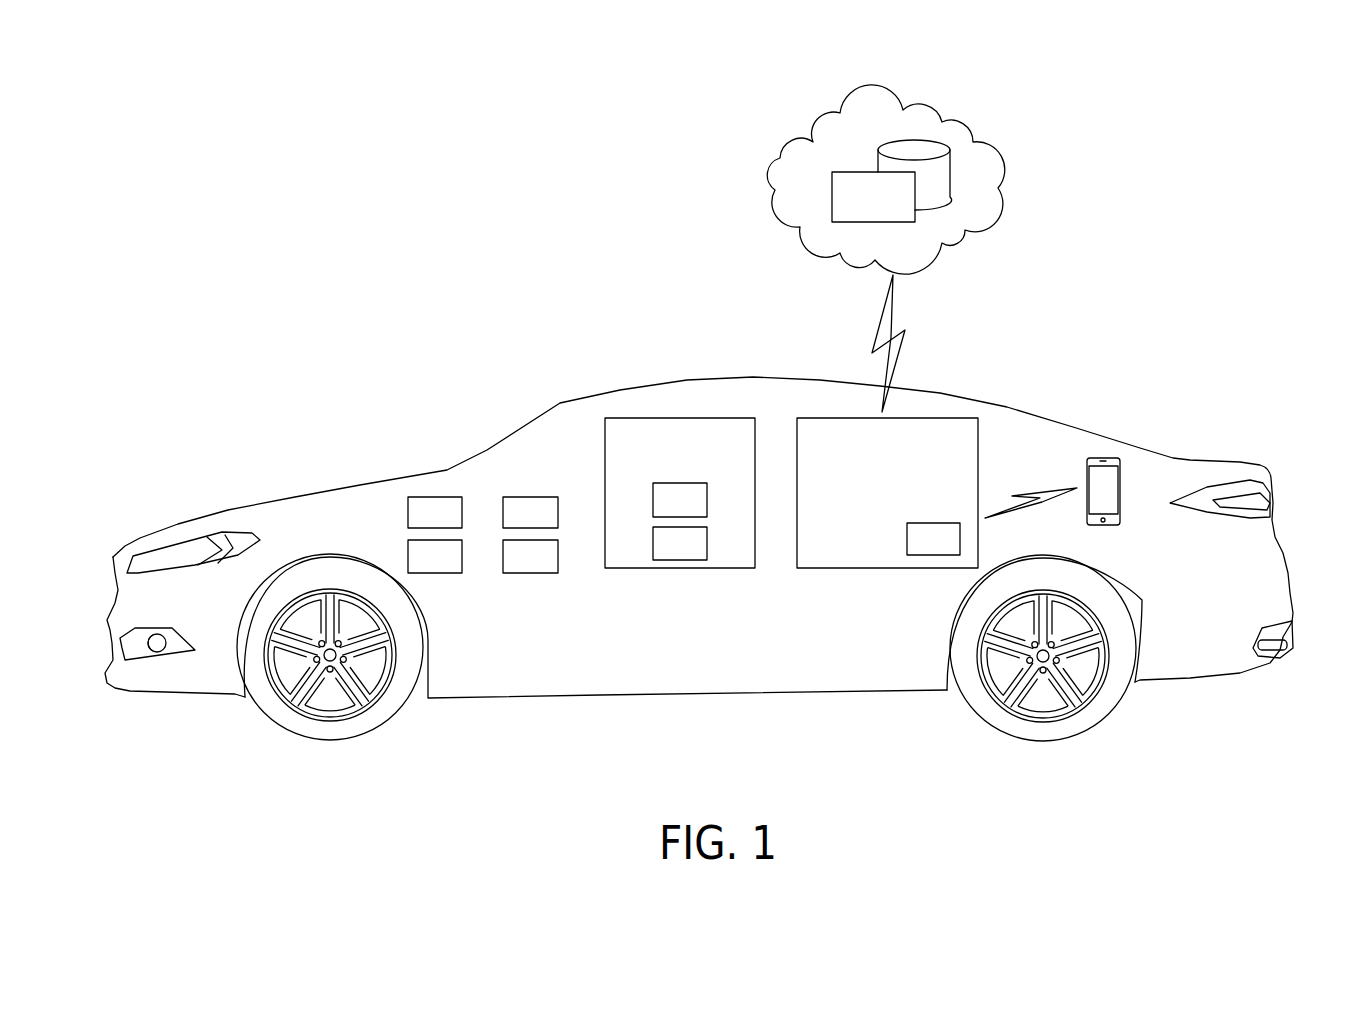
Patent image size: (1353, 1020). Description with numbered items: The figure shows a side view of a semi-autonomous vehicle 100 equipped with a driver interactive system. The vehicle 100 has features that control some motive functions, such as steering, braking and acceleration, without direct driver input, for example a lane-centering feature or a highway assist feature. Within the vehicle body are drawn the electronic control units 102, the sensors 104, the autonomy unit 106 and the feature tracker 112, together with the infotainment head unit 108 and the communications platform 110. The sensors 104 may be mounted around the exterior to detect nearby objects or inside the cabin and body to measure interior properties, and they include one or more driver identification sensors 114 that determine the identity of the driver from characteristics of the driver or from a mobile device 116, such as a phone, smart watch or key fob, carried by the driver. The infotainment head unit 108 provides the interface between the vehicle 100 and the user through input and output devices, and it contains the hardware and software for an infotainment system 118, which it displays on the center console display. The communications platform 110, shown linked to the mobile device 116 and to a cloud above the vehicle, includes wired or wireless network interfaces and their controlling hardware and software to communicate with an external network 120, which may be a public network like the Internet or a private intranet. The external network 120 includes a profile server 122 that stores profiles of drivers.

The semi-autonomous vehicle 100 is at (1212, 460).
The electronic control units 102 is at (452, 524).
The sensors 104 is at (452, 568).
The autonomy unit 106 is at (547, 568).
The infotainment head unit 108 is at (680, 525).
The communications platform 110 is at (874, 568).
The feature tracker 112 is at (680, 543).
The driver identification sensors 114 is at (547, 524).
The mobile device 116 is at (1120, 510).
The infotainment system 118 is at (697, 511).
The external network 120 is at (929, 179).
The profile server 122 is at (950, 197).